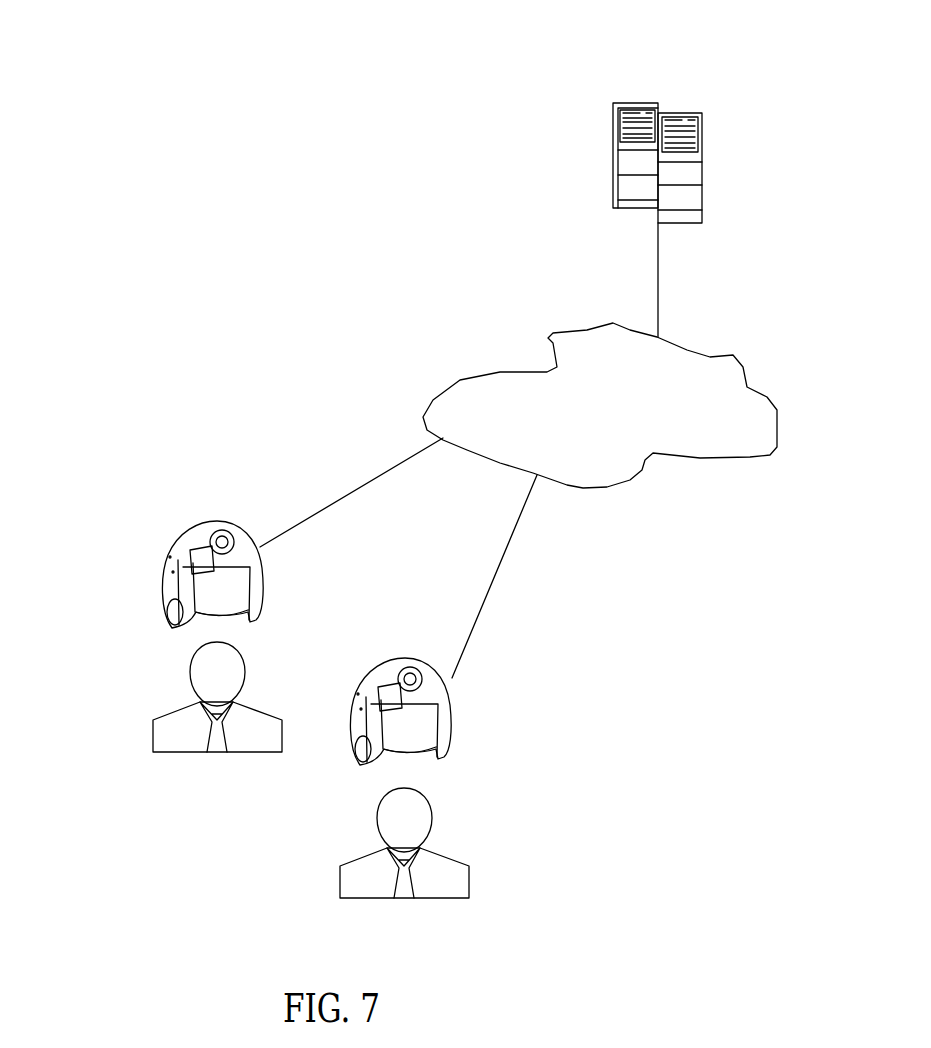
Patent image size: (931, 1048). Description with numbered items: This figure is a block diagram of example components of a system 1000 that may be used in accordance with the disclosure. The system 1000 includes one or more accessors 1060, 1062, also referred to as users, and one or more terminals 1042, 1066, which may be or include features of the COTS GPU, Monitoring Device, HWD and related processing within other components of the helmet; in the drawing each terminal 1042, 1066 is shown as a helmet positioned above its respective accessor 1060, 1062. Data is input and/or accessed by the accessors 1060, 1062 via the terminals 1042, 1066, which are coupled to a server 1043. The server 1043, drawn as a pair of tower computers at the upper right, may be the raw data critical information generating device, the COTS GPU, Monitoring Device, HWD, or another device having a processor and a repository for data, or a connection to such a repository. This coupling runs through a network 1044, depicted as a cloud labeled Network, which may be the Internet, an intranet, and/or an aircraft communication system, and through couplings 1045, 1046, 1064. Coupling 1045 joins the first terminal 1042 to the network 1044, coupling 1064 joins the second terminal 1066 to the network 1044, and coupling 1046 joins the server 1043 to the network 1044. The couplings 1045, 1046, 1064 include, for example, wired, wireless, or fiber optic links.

The system 1000 is at (208, 136).
The server 1043 is at (695, 116).
The coupling 1046 is at (658, 263).
The network 1044 is at (548, 354).
The coupling 1045 is at (353, 492).
The coupling 1064 is at (497, 582).
The terminal 1042 is at (170, 538).
The terminal 1066 is at (457, 728).
The accessor 1060 is at (153, 720).
The accessor 1062 is at (470, 873).